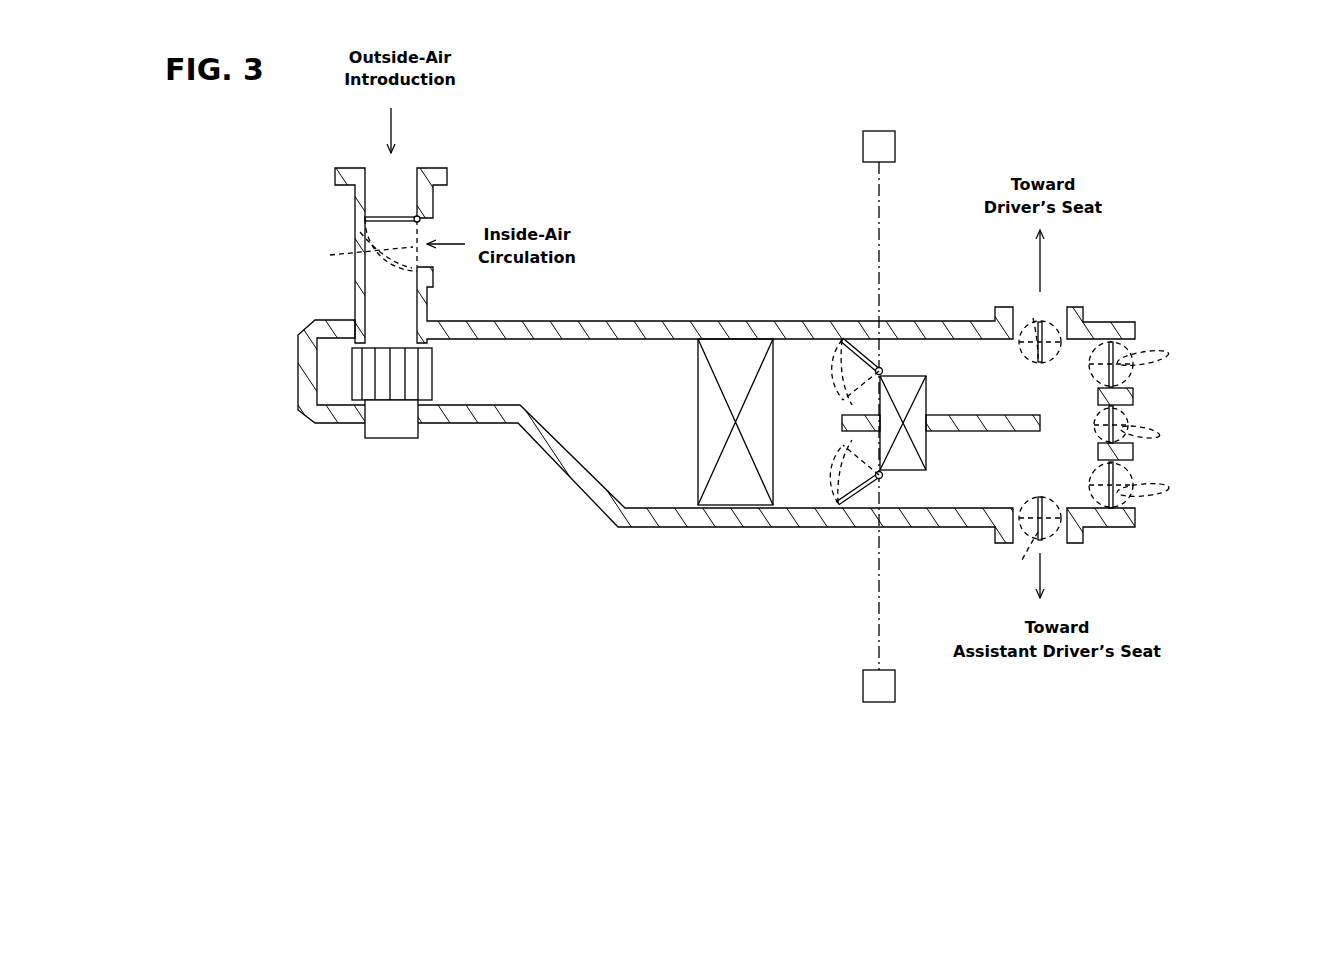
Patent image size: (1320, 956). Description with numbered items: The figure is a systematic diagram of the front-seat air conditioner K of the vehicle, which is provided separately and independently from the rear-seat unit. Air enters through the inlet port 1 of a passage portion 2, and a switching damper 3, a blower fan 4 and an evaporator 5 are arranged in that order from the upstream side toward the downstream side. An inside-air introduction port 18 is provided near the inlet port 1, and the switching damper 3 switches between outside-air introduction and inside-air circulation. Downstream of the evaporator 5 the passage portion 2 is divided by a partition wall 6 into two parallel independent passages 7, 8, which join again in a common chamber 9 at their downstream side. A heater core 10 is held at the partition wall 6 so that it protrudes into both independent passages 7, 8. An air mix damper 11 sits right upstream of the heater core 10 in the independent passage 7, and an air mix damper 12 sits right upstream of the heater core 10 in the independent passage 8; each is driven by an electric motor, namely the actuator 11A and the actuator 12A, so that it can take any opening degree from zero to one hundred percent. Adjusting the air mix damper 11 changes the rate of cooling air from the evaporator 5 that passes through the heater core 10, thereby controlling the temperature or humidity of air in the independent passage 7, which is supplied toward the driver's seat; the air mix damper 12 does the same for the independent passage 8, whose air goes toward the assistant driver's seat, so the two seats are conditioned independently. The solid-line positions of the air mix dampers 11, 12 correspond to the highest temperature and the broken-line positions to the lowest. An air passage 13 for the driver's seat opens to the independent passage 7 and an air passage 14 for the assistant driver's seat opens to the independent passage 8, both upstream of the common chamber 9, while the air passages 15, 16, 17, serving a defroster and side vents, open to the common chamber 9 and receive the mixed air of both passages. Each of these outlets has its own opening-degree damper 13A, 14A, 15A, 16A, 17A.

The front-seat air conditioner K is at (692, 163).
The inlet port 1 is at (380, 197).
The passage portion 2 is at (592, 443).
The switching damper 3 is at (387, 222).
The blower fan 4 is at (370, 382).
The evaporator 5 is at (735, 492).
The partition wall 6 is at (957, 430).
The independent passage 7 is at (950, 360).
The independent passage 8 is at (973, 482).
The common chamber 9 is at (1062, 418).
The heater core 10 is at (902, 388).
The air mix damper 11 is at (867, 355).
The electric motor (actuator) 11A is at (878, 140).
The air mix damper 12 is at (862, 500).
The electric motor (actuator) 12A is at (895, 686).
The air passage (air outlet) for the driver's seat 13 is at (1050, 313).
The damper for adjusting an opening degree 13A is at (1033, 318).
The air passage (air outlet) for the assistant driver's seat 14 is at (1057, 540).
The damper for adjusting an opening degree 14A is at (1038, 532).
The air passage (air outlet) 15 is at (1130, 440).
The damper for adjusting an opening degree 15A is at (1127, 417).
The air passage (air outlet) 16 is at (1127, 347).
The damper for adjusting an opening degree 16A is at (1112, 377).
The air passage (air outlet) 17 is at (1130, 507).
The damper for adjusting an opening degree 17A is at (1130, 475).
The inside-air introduction port 18 is at (427, 258).